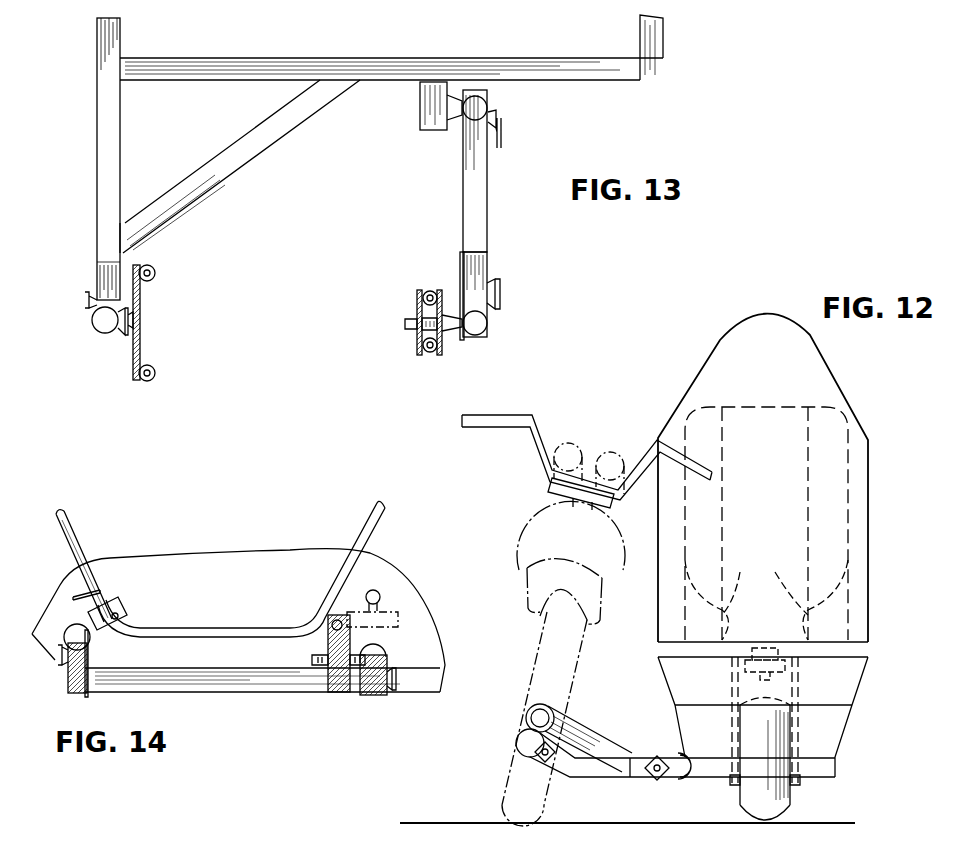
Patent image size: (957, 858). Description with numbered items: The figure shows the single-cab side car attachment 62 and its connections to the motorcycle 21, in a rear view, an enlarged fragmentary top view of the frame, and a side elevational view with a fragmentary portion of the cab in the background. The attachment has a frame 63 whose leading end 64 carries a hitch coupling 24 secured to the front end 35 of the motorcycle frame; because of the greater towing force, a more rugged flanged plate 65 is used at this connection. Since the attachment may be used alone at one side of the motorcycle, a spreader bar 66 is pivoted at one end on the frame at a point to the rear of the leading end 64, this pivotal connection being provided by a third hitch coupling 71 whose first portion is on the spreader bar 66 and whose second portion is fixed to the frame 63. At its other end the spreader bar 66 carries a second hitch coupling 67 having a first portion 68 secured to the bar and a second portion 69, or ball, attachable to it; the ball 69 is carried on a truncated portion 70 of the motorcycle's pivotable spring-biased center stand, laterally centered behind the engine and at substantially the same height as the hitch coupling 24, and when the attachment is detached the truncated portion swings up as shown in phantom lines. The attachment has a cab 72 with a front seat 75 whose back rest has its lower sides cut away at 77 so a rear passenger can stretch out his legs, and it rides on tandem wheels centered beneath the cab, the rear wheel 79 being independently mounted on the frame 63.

In FIG. 12, the motorcycle 21 is at (548, 445).
In FIG. 13, the hitch coupling 24 is at (92, 318).
In FIG. 12, the hitch coupling 24 is at (530, 705).
In FIG. 14, the hitch coupling 24 is at (65, 618).
In FIG. 14, the front end of the motorcycle frame 35 is at (73, 548).
In FIG. 12, the side car attachment 62 is at (858, 410).
In FIG. 13, the frame 63 is at (385, 72).
In FIG. 14, the frame 63 is at (278, 684).
In FIG. 13, the leading end 64 is at (100, 185).
In FIG. 12, the leading end 64 is at (588, 740).
In FIG. 14, the flanged plate 65 is at (105, 580).
In FIG. 13, the spreader bar 66 is at (490, 210).
In FIG. 12, the spreader bar 66 is at (620, 770).
In FIG. 13, the second hitch coupling 67 is at (495, 262).
In FIG. 12, the second hitch coupling 67 is at (522, 745).
In FIG. 14, the second hitch coupling 67 is at (388, 663).
In FIG. 13, the first portion 68 is at (472, 300).
In FIG. 13, the second portion 69 is at (455, 330).
In FIG. 13, the truncated portion of center stand 70 is at (430, 290).
In FIG. 14, the truncated portion of center stand 70 is at (333, 635).
In FIG. 13, the third hitch coupling 71 is at (497, 125).
In FIG. 12, the third hitch coupling 71 is at (672, 777).
In FIG. 14, the cab 72 is at (190, 565).
In FIG. 12, the front seat 75 is at (692, 418).
In FIG. 12, the cut away portions 77 is at (766, 597).
In FIG. 12, the wheel 79 is at (757, 785).